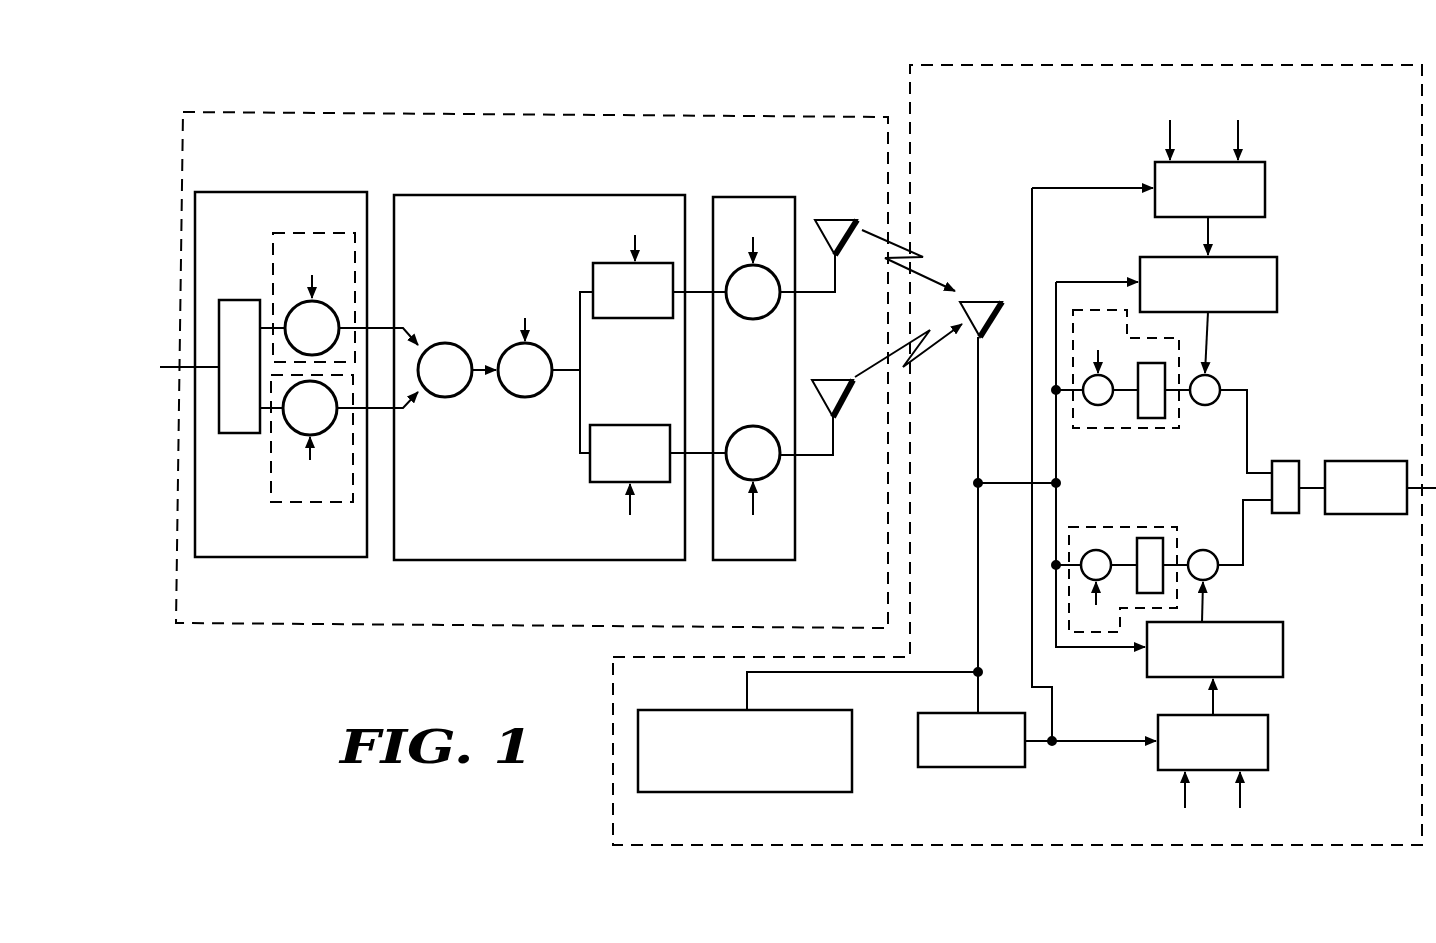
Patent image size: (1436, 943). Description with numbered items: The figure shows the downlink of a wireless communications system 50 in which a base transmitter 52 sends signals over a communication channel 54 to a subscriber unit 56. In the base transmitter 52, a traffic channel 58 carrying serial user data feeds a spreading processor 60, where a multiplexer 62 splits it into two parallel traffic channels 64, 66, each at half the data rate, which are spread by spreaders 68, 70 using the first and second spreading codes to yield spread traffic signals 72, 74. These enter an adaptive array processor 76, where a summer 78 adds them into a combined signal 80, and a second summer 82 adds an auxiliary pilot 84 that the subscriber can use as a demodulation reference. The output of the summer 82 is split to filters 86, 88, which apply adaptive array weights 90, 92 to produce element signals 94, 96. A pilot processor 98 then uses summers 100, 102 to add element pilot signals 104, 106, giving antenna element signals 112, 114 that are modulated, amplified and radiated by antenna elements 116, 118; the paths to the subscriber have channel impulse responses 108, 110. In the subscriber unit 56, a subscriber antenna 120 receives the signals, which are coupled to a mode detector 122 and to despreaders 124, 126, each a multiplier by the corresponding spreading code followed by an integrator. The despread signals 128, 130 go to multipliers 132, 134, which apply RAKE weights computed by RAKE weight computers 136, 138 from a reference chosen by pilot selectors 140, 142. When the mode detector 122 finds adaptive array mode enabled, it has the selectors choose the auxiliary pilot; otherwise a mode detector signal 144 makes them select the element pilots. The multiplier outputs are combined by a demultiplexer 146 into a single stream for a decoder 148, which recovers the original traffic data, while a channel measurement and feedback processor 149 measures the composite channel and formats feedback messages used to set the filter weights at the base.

The wireless communications system 50 is at (243, 88).
The base transmitter 52 is at (518, 112).
The communication channel 54 is at (903, 230).
The subscriber unit 56 is at (1285, 64).
The traffic channel 58 is at (185, 365).
The spreading processor 60 is at (343, 191).
The multiplexer 62 is at (216, 426).
The parallel traffic channel 64 is at (266, 326).
The parallel traffic channel 66 is at (264, 412).
The spreader 68 is at (290, 232).
The spreader 70 is at (345, 503).
The spread traffic signal 72 is at (370, 326).
The spread traffic signal 74 is at (370, 412).
The adaptive array processor 76 is at (400, 194).
The summer 78 is at (453, 398).
The combined signal 80 is at (487, 366).
The summer 82 is at (529, 398).
The auxiliary pilot 84 is at (531, 276).
The filter 86 is at (603, 319).
The filter 88 is at (603, 424).
The adaptive array weight 90 is at (629, 226).
The adaptive array weight 92 is at (618, 502).
The element signal 94 is at (703, 288).
The element signal 96 is at (699, 470).
The pilot processor 98 is at (725, 163).
The summer 100 is at (762, 320).
The summer 102 is at (750, 425).
The element pilot signal 104 is at (772, 225).
The element pilot signal 106 is at (715, 562).
The channel impulse response 108 is at (874, 188).
The channel impulse response 110 is at (857, 423).
The antenna element signal 112 is at (836, 280).
The antenna element signal 114 is at (797, 460).
The antenna element 116 is at (860, 226).
The antenna element 118 is at (816, 378).
The subscriber antenna 120 is at (974, 300).
The mode detector 122 is at (1003, 768).
The despreader 124 is at (1085, 430).
The despreader 126 is at (1095, 526).
The despread signal 128 is at (1184, 394).
The despread signal 130 is at (1182, 560).
The multiplier 132 is at (1222, 385).
The multiplier 134 is at (1219, 572).
The RAKE weight computer 136 is at (1278, 257).
The RAKE weight computer 138 is at (1284, 630).
The pilot selector 140 is at (1266, 162).
The pilot selector 142 is at (1269, 717).
The mode detector signal 144 is at (1078, 740).
The demultiplexer 146 is at (1282, 514).
The decoder 148 is at (1330, 460).
The channel measurement and feedback processor 149 is at (760, 710).